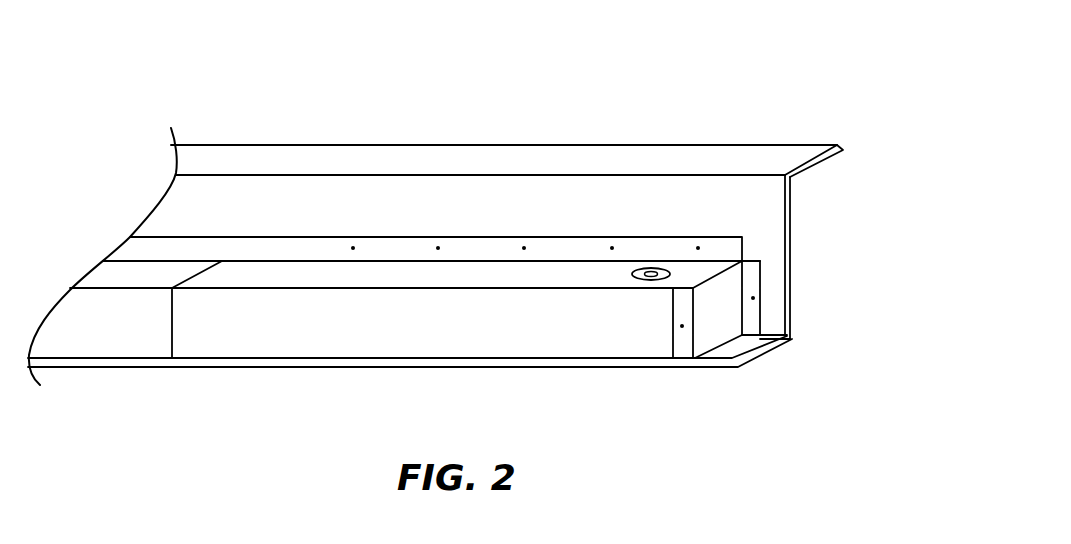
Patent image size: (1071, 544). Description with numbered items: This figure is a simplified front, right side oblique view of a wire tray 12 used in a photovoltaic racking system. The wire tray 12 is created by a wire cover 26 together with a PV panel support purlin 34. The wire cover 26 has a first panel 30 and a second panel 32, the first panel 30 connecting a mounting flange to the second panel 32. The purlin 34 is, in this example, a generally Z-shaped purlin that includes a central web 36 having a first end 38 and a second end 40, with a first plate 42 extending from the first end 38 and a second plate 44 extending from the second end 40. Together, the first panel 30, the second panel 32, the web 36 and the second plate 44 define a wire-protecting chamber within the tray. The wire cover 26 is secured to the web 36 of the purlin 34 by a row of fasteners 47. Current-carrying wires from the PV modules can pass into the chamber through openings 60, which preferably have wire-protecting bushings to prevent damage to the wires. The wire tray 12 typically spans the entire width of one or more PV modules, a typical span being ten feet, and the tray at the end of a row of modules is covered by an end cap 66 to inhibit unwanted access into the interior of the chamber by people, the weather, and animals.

The wire tray 12 is at (172, 430).
The wire cover 26 is at (205, 345).
The first panel 30 is at (237, 273).
The second panel 32 is at (308, 332).
The PV panel support purlin 34 is at (883, 120).
The central web 36 is at (790, 275).
The first end 38 is at (785, 175).
The second end 40 is at (792, 336).
The first plate 42 is at (585, 158).
The second plate 44 is at (737, 347).
The fasteners 47 is at (438, 248).
The openings 60 is at (651, 268).
The end cap 66 is at (715, 311).